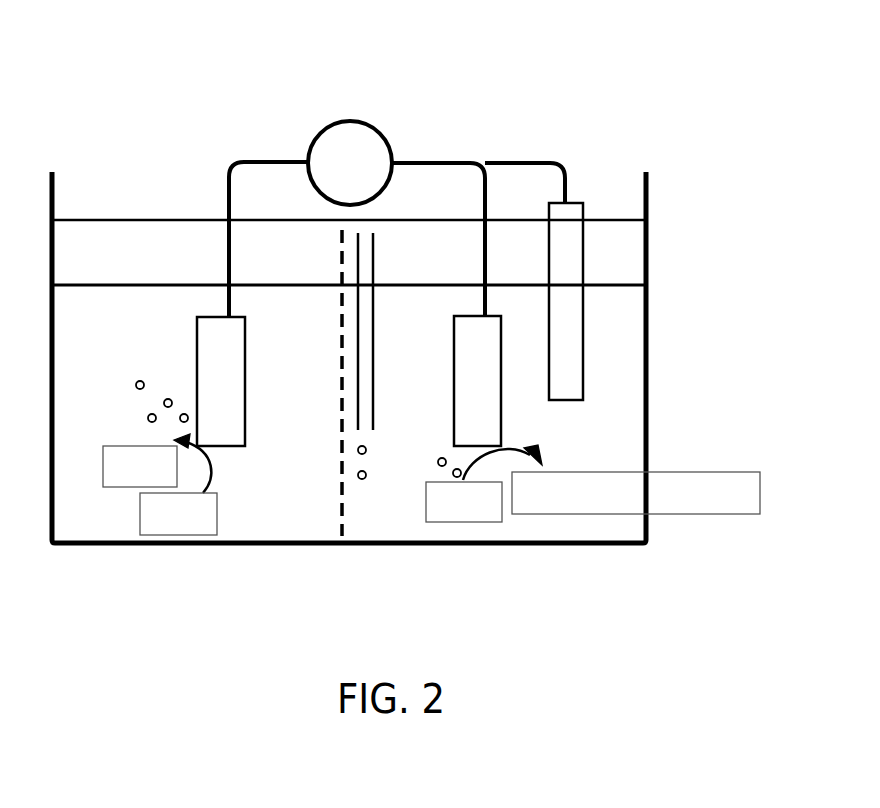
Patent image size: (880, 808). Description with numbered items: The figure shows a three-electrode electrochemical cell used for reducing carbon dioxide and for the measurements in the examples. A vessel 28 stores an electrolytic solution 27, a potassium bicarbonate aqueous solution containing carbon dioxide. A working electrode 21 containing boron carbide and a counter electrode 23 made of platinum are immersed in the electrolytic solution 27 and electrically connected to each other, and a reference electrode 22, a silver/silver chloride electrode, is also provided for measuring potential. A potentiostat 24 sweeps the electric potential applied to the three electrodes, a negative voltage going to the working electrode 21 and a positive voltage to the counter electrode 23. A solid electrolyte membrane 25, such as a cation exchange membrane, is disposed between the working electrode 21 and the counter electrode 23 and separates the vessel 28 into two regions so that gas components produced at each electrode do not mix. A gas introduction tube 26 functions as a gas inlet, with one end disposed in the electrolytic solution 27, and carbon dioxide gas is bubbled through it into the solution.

The working electrode 21 is at (482, 365).
The reference electrode 22 is at (565, 313).
The counter electrode 23 is at (207, 333).
The potentiostat 24 is at (355, 130).
The solid electrolyte membrane 25 is at (342, 473).
The gas introduction tube 26 is at (373, 417).
The electrolytic solution 27 is at (620, 430).
The vessel 28 is at (647, 342).